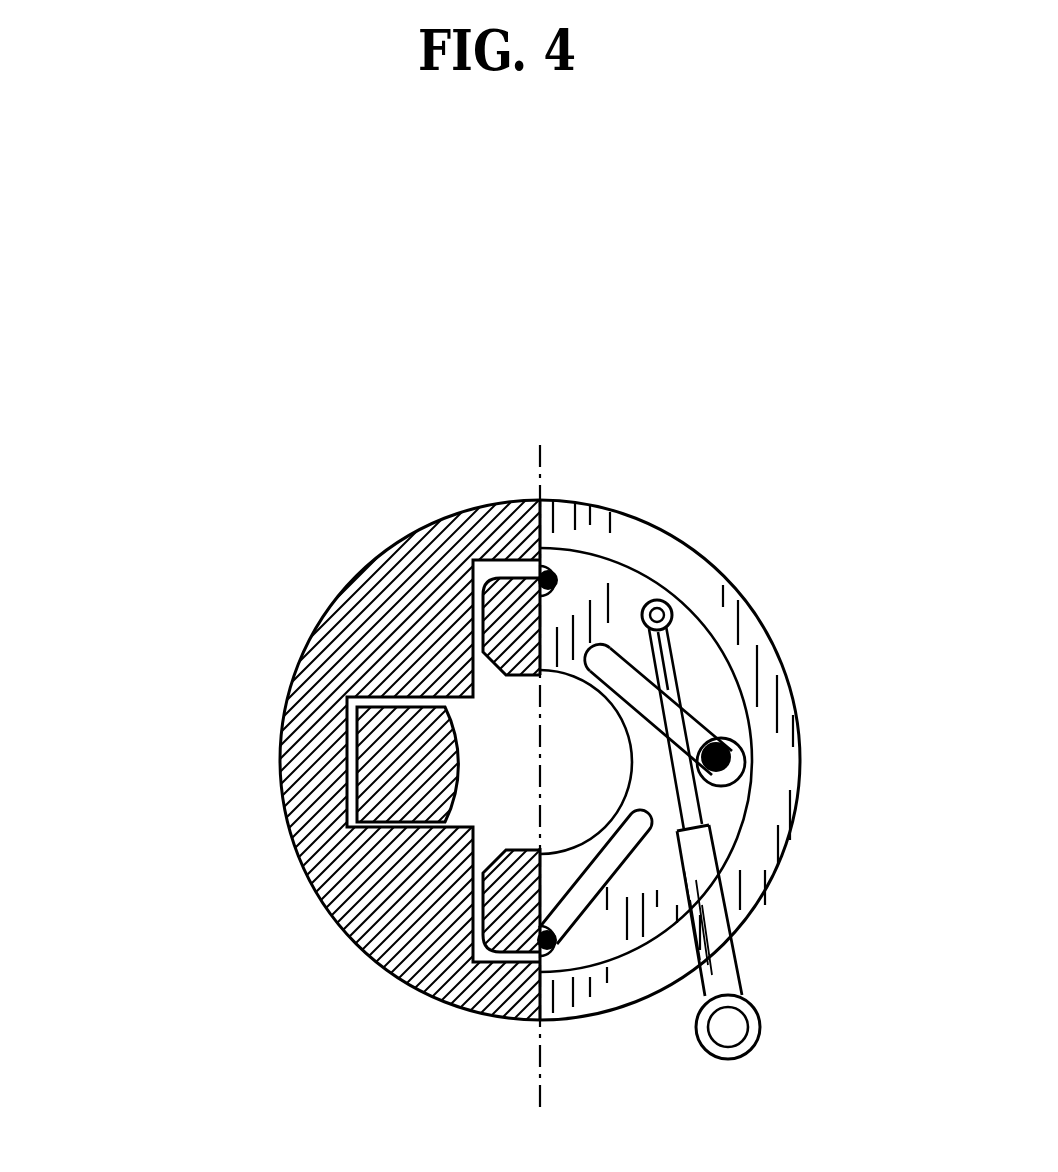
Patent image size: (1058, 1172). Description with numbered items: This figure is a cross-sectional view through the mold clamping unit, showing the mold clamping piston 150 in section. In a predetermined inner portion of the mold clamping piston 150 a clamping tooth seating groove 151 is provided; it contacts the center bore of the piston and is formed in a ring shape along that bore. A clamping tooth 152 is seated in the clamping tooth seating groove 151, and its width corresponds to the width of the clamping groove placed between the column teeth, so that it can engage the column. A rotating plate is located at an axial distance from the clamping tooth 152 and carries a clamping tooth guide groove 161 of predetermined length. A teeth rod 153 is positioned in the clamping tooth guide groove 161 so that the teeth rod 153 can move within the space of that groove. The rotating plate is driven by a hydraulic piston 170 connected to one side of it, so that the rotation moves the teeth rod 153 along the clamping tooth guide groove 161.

The mold clamping piston 150 is at (387, 557).
The clamping tooth seating groove 151 is at (310, 656).
The clamping tooth 152 is at (365, 777).
The teeth rod 153 is at (740, 770).
The clamping tooth guide groove 161 is at (597, 650).
The hydraulic piston 170 is at (740, 930).